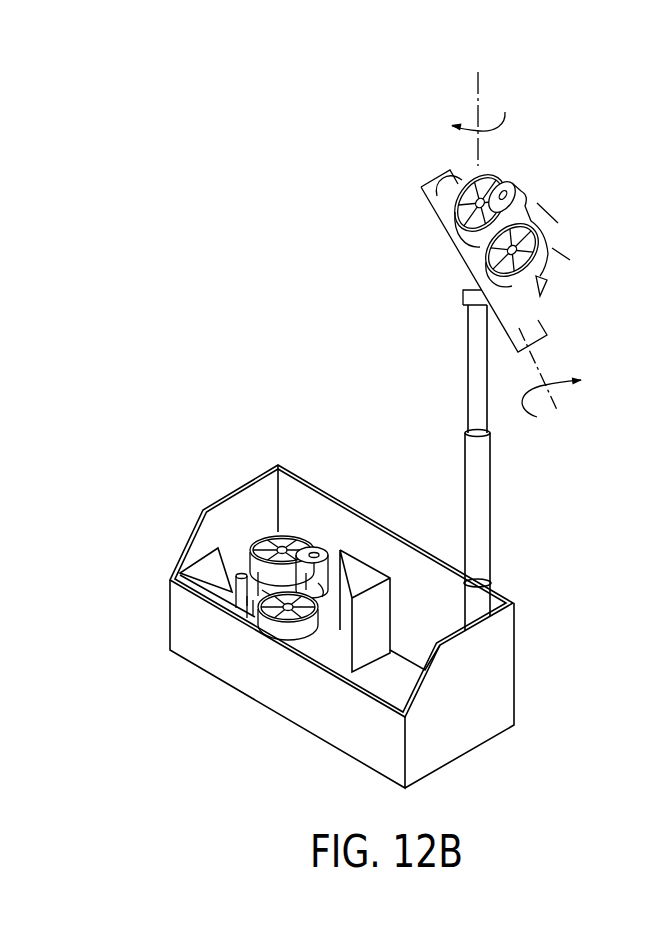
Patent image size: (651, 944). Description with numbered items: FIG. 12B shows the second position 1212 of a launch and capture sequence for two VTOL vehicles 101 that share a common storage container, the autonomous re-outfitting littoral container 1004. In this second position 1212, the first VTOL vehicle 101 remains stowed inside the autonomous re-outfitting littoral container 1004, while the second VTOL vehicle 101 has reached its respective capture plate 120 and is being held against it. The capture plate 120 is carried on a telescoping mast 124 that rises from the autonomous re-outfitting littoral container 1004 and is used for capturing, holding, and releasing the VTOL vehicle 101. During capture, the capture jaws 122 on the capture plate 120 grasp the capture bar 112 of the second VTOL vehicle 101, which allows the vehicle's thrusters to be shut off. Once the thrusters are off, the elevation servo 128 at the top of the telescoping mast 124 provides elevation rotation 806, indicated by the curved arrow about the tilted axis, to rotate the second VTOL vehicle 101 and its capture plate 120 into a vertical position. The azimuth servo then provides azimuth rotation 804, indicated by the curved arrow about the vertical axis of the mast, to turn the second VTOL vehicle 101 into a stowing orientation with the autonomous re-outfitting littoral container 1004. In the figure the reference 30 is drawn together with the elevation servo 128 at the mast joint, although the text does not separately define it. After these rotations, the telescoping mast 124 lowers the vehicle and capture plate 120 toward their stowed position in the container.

The azimuth rotation 804 is at (477, 82).
The elevation rotation 806 is at (560, 408).
The VTOL vehicle 101 is at (543, 183).
The capture plate 120 is at (430, 180).
The capture jaws 122 is at (387, 238).
The capture bar 112 is at (448, 225).
The elevation servo 128 is at (389, 320).
The connector 30 is at (450, 303).
The telescoping mast 124 is at (491, 507).
The second position 1212 is at (255, 398).
The autonomous re-outfitting littoral container 1004 is at (442, 752).